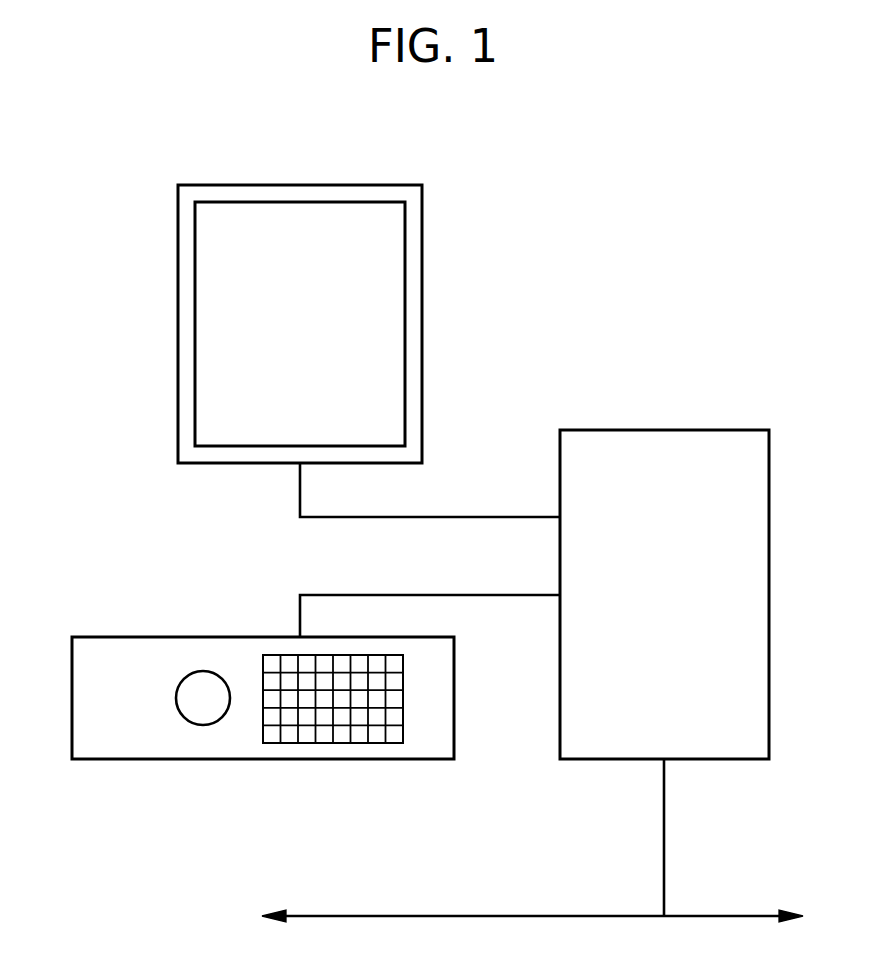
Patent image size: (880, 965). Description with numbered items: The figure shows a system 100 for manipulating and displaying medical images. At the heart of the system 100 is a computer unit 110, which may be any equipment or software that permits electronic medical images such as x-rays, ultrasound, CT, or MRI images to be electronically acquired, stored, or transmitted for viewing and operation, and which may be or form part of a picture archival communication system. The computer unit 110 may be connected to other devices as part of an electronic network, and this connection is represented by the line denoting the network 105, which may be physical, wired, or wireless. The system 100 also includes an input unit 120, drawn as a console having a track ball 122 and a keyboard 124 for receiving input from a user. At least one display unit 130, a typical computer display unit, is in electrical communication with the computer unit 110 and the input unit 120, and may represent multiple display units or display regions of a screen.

The system 100 is at (655, 166).
The network 105 is at (510, 915).
The computer unit 110 is at (694, 430).
The input unit 120 is at (147, 637).
The track ball 122 is at (203, 725).
The keyboard 124 is at (341, 743).
The display unit 130 is at (398, 185).